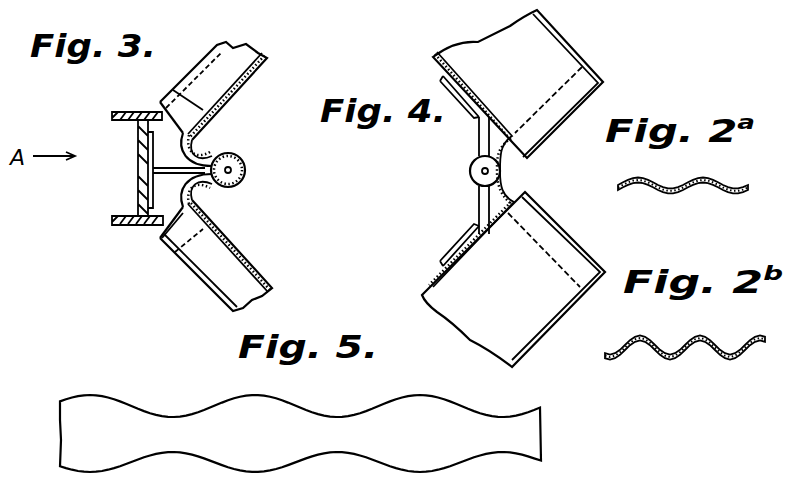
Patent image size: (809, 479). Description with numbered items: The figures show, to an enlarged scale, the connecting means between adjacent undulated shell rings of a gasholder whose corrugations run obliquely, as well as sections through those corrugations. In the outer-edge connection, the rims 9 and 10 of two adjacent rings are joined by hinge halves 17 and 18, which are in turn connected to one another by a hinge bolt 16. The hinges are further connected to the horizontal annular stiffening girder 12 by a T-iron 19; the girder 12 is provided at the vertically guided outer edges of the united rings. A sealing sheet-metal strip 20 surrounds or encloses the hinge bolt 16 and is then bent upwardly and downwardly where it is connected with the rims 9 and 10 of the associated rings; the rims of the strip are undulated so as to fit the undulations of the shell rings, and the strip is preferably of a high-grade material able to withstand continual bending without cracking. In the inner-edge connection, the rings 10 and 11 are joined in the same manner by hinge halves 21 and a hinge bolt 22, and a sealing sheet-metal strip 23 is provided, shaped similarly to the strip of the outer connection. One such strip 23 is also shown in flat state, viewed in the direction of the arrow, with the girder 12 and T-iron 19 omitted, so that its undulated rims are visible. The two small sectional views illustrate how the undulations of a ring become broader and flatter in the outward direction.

In FIG. 3, the rim 9 is at (212, 270).
In FIG. 3, the rim 10 is at (247, 60).
In FIG. 4, the rim 10 is at (513, 279).
In FIG. 4, the ring 11 is at (518, 84).
In FIG. 3, the stiffening girder 12 is at (115, 113).
In FIG. 3, the bolt 16 is at (232, 168).
In FIG. 3, the hinge half 17 is at (150, 143).
In FIG. 3, the hinge half 18 is at (178, 186).
In FIG. 3, the T-iron 19 is at (176, 172).
In FIG. 3, the sealing sheet-metal strip 20 is at (185, 180).
In FIG. 4, the hinge half 21 is at (465, 105).
In FIG. 4, the hinge bolt 22 is at (470, 172).
In FIG. 3, the sealing sheet-metal strip 23 is at (194, 140).
In FIG. 4, the sealing sheet-metal strip 23 is at (497, 193).
In FIG. 5, the sealing sheet-metal strip 23 is at (474, 423).